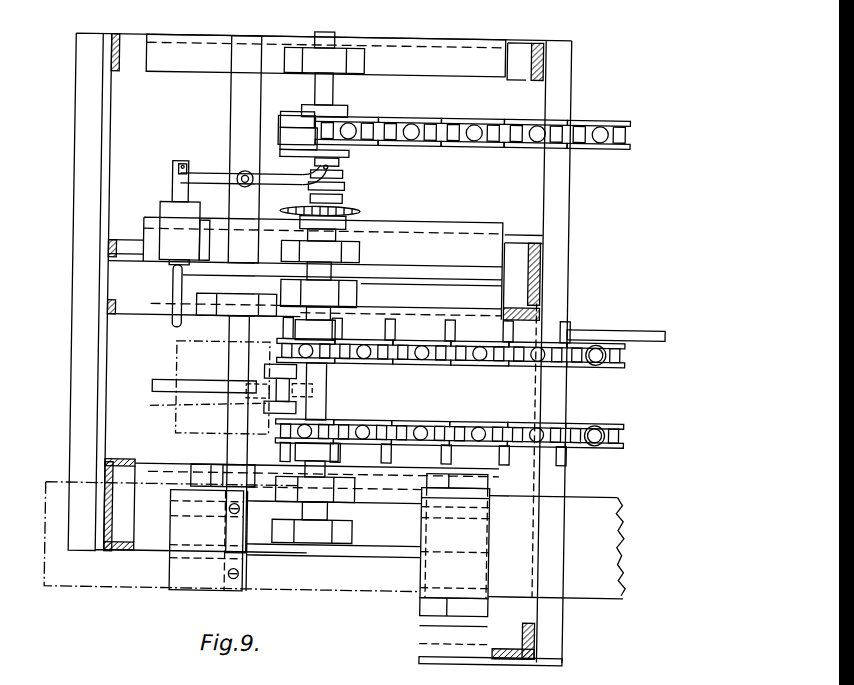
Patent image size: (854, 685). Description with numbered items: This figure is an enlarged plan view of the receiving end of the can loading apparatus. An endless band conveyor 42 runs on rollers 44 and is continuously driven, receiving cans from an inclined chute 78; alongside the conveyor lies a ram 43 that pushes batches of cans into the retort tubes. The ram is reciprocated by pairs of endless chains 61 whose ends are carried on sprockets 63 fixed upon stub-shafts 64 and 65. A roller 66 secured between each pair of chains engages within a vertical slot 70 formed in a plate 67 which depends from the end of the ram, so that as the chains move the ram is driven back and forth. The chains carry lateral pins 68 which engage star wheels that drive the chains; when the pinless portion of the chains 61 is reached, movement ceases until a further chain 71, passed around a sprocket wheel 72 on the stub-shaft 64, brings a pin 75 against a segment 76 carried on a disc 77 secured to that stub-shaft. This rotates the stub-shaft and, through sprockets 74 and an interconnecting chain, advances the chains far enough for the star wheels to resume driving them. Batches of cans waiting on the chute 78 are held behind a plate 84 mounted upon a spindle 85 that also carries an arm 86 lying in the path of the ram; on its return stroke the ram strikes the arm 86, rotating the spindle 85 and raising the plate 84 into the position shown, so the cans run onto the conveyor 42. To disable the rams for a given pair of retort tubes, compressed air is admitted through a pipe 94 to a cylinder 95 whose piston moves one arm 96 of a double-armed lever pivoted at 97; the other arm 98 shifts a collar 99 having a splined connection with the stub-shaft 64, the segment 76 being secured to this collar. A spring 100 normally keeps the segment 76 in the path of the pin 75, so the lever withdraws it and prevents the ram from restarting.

The endless band conveyor 42 is at (615, 520).
The ram 43 is at (185, 350).
The rollers 44 is at (424, 597).
The endless chains 61 is at (594, 428).
The sprockets 63 is at (317, 440).
The stub-shaft 64 is at (318, 83).
The stub-shaft 65 is at (325, 506).
The roller 66 is at (270, 407).
The plate 67 is at (193, 410).
The lateral pins 68 is at (447, 318).
The vertical slot 70 is at (318, 327).
The chain 71 is at (603, 118).
The sprocket wheel 72 is at (341, 108).
The sprockets 74 is at (363, 211).
The pin 75 is at (276, 132).
The segment 76 is at (277, 148).
The disc 77 is at (340, 155).
The inclined chute 78 is at (108, 573).
The plate 84 is at (186, 568).
The spindle 85 is at (238, 450).
The arm 86 is at (158, 383).
The pipe 94 is at (176, 286).
The cylinder 95 is at (168, 214).
The arm 96 is at (198, 179).
The pivot 97 is at (234, 171).
The arm 98 is at (302, 178).
The collar 99 is at (339, 168).
The spring 100 is at (336, 188).